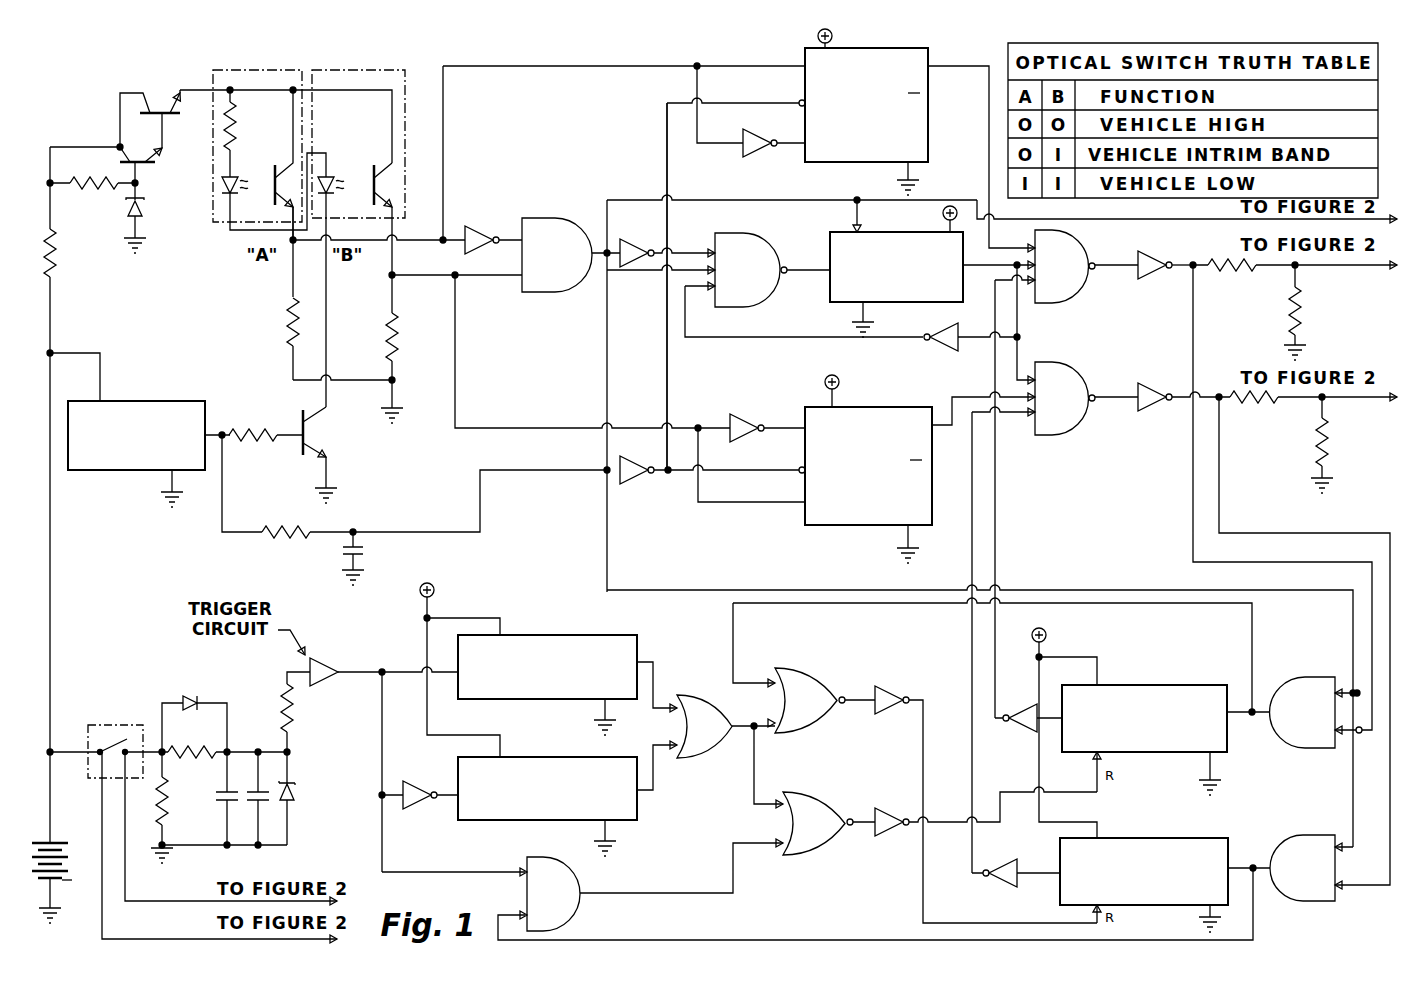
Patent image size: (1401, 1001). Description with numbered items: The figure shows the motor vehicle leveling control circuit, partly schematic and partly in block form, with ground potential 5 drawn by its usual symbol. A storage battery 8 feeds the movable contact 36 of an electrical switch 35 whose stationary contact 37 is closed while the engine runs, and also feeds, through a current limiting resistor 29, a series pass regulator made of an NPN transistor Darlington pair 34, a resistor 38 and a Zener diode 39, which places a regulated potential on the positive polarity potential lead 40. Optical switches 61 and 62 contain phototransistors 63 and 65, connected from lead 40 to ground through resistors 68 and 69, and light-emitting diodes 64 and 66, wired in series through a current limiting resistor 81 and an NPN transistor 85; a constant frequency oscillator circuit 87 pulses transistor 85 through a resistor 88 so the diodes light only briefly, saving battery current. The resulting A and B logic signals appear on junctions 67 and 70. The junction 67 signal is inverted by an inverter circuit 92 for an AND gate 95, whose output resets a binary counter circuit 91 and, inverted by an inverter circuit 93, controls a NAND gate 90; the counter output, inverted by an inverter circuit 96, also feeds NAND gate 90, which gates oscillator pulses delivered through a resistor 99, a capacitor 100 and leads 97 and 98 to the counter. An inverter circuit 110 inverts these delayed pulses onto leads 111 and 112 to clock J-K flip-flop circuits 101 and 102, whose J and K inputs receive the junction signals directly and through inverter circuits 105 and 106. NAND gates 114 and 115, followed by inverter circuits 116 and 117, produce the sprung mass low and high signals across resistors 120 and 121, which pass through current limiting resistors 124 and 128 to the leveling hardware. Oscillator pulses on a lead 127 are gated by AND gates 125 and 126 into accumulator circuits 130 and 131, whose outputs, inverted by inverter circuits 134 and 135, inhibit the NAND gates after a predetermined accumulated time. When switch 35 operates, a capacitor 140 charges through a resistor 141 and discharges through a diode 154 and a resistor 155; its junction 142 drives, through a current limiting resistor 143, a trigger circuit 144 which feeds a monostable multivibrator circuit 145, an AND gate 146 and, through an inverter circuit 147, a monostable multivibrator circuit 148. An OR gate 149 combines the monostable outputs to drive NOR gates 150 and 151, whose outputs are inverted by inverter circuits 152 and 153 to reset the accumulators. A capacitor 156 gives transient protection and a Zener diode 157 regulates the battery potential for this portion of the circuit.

The point of reference or ground potential 5 is at (142, 244).
The storage battery 8 is at (60, 865).
The current limiting resistor 29 is at (55, 255).
The NPN transistor Darlington pair 34 is at (130, 126).
The electrical switch 35 is at (95, 775).
The movable contact 36 is at (105, 745).
The stationary contact 37 is at (126, 748).
The resistor 38 is at (85, 190).
The Zener diode 39 is at (145, 214).
The positive polarity potential lead 40 is at (200, 88).
The optical switch 61 is at (288, 70).
The optical switch 62 is at (382, 74).
The phototransistor 63 is at (273, 170).
The light-emitting diode 64 is at (220, 176).
The phototransistor 65 is at (380, 180).
The light-emitting diode 66 is at (330, 175).
The junction 67 is at (293, 260).
The resistor 68 is at (288, 323).
The resistor 69 is at (388, 338).
The junction 70 is at (390, 286).
The current limiting resistor 81 is at (238, 130).
The NPN transistor 85 is at (315, 438).
The constant frequency oscillator circuit 87 is at (160, 405).
The resistor 88 is at (254, 428).
The NAND gate 90 is at (762, 286).
The binary counter circuit 91 is at (847, 236).
The inverter circuit 92 is at (475, 230).
The inverter circuit 93 is at (630, 248).
The AND gate 95 is at (560, 225).
The inverter circuit 96 is at (940, 345).
The lead 97 is at (465, 530).
The lead 98 is at (605, 372).
The resistor 99 is at (282, 528).
The capacitor 100 is at (343, 552).
The J-K flip-flop circuit 101 is at (913, 140).
The J-K flip-flop circuit 102 is at (845, 518).
The inverter circuit 105 is at (750, 150).
The inverter circuit 106 is at (749, 415).
The inverter circuit 110 is at (638, 485).
The lead 111 is at (670, 374).
The lead 112 is at (722, 474).
The NAND gate 114 is at (1073, 298).
The NAND gate 115 is at (1080, 435).
The inverter circuit 116 is at (1150, 282).
The inverter circuit 117 is at (1150, 414).
The resistor 120 is at (1291, 320).
The resistor 121 is at (1318, 442).
The current limiting resistor 124 is at (1232, 270).
The AND gate 125 is at (1295, 836).
The AND gate 126 is at (1300, 688).
The lead 127 is at (668, 590).
The current limiting resistor 128 is at (1254, 403).
The accumulator circuit 130 is at (1115, 843).
The accumulator circuit 131 is at (1150, 690).
The inverter circuit 134 is at (995, 883).
The inverter circuit 135 is at (1023, 730).
The capacitor 140 is at (222, 797).
The resistor 141 is at (205, 748).
The junction 142 is at (290, 748).
The current limiting resistor 143 is at (287, 700).
The trigger circuit 144 is at (332, 665).
The monostable multivibrator circuit 145 is at (548, 635).
The AND gate 146 is at (570, 905).
The inverter circuit 147 is at (415, 810).
The monostable multivibrator circuit 148 is at (577, 757).
The OR gate 149 is at (705, 715).
The NOR gate 150 is at (804, 686).
The NOR gate 151 is at (810, 810).
The inverter circuit 152 is at (889, 690).
The inverter circuit 153 is at (885, 836).
The diode 154 is at (195, 698).
The resistor 155 is at (168, 800).
The capacitor 156 is at (265, 798).
The Zener diode 157 is at (295, 785).